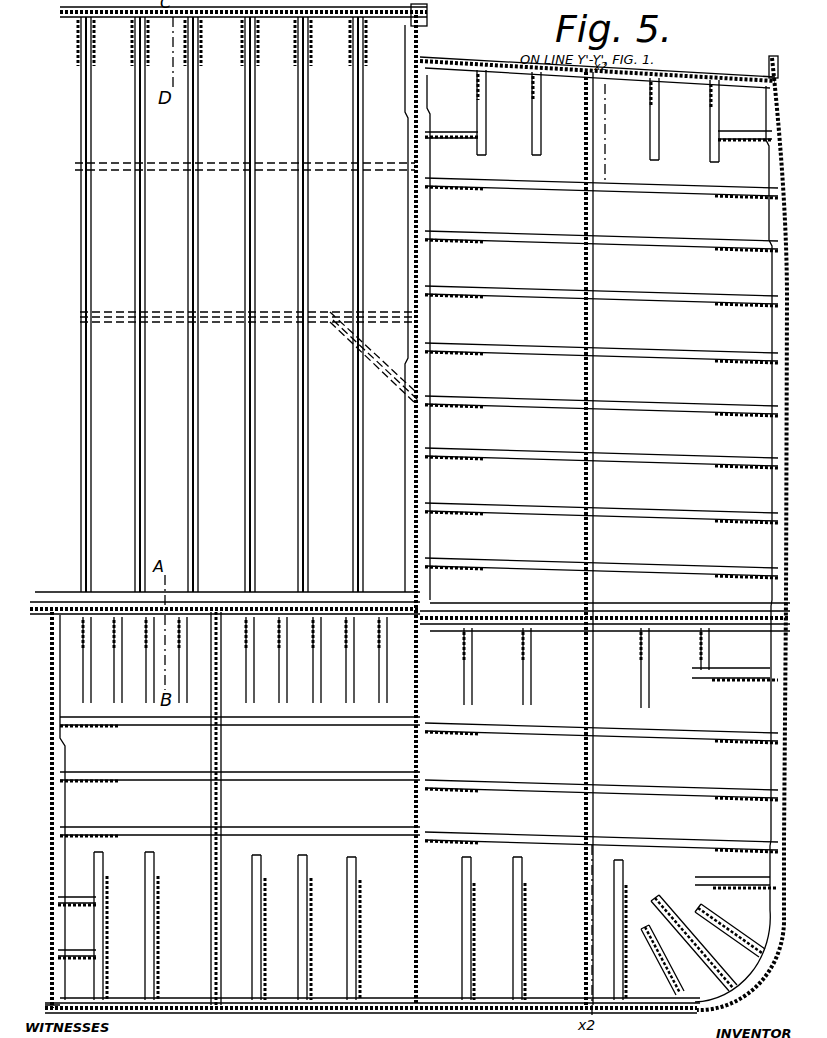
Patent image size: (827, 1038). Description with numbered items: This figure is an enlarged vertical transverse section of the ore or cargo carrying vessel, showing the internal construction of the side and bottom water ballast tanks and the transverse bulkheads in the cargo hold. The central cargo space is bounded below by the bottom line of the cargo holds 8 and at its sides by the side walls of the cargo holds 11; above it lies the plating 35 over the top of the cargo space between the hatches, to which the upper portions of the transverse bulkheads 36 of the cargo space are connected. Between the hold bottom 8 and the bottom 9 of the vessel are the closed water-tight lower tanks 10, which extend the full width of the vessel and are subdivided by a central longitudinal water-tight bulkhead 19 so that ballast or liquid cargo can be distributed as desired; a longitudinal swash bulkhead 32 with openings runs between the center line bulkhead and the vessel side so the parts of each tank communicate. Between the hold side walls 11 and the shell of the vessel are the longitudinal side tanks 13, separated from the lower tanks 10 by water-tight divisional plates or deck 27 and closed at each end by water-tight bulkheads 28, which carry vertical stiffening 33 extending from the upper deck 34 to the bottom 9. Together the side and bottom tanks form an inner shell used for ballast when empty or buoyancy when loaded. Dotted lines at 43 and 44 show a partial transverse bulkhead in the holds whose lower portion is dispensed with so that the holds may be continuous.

The bottom line of the cargo holds 8 is at (262, 606).
The bottom of the vessel 9 is at (304, 1012).
The lower tanks 10 is at (240, 808).
The side walls of the cargo holds 11 is at (412, 160).
The side tanks 13 is at (601, 378).
The longitudinal water-tight bulkhead 19 is at (54, 790).
The water-tight divisional plates or deck 27 is at (630, 620).
The water-tight bulkheads 28 is at (606, 534).
The swash bulkhead 32 is at (425, 758).
The vertical stiffening 33 is at (590, 480).
The upper deck 34 is at (452, 62).
The plating 35 is at (341, 17).
The transverse bulkheads 36 is at (222, 353).
The partial transverse bulkhead 43 is at (272, 166).
The partial transverse bulkhead 44 is at (218, 313).